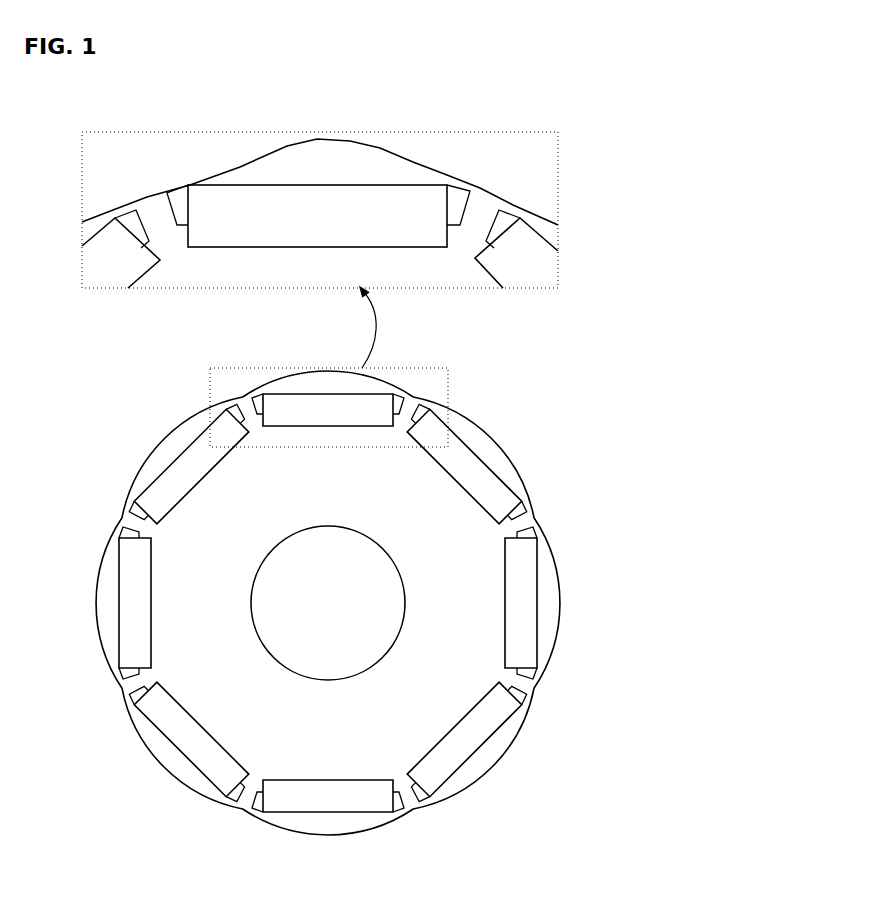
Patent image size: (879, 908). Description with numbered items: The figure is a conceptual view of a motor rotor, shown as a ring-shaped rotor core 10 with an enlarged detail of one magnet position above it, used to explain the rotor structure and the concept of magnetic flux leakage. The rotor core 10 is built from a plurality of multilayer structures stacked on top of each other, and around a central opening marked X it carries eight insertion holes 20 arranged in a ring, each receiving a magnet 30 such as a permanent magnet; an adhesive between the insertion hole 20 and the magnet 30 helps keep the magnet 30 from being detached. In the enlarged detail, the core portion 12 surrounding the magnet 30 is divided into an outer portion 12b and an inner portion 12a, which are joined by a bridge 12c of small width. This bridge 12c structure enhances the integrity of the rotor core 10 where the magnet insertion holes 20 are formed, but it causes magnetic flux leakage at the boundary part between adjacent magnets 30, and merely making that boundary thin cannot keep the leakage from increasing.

The rotor core 10 is at (331, 457).
The pole portion of rotor core 12 is at (523, 687).
The inner portion of the rotor core 12a is at (173, 268).
The outer portion of the rotor core 12b is at (130, 203).
The bridge 12c is at (155, 213).
The insertion hole 20 is at (357, 449).
The magnet 30 is at (520, 622).
The rotation axis X is at (315, 613).